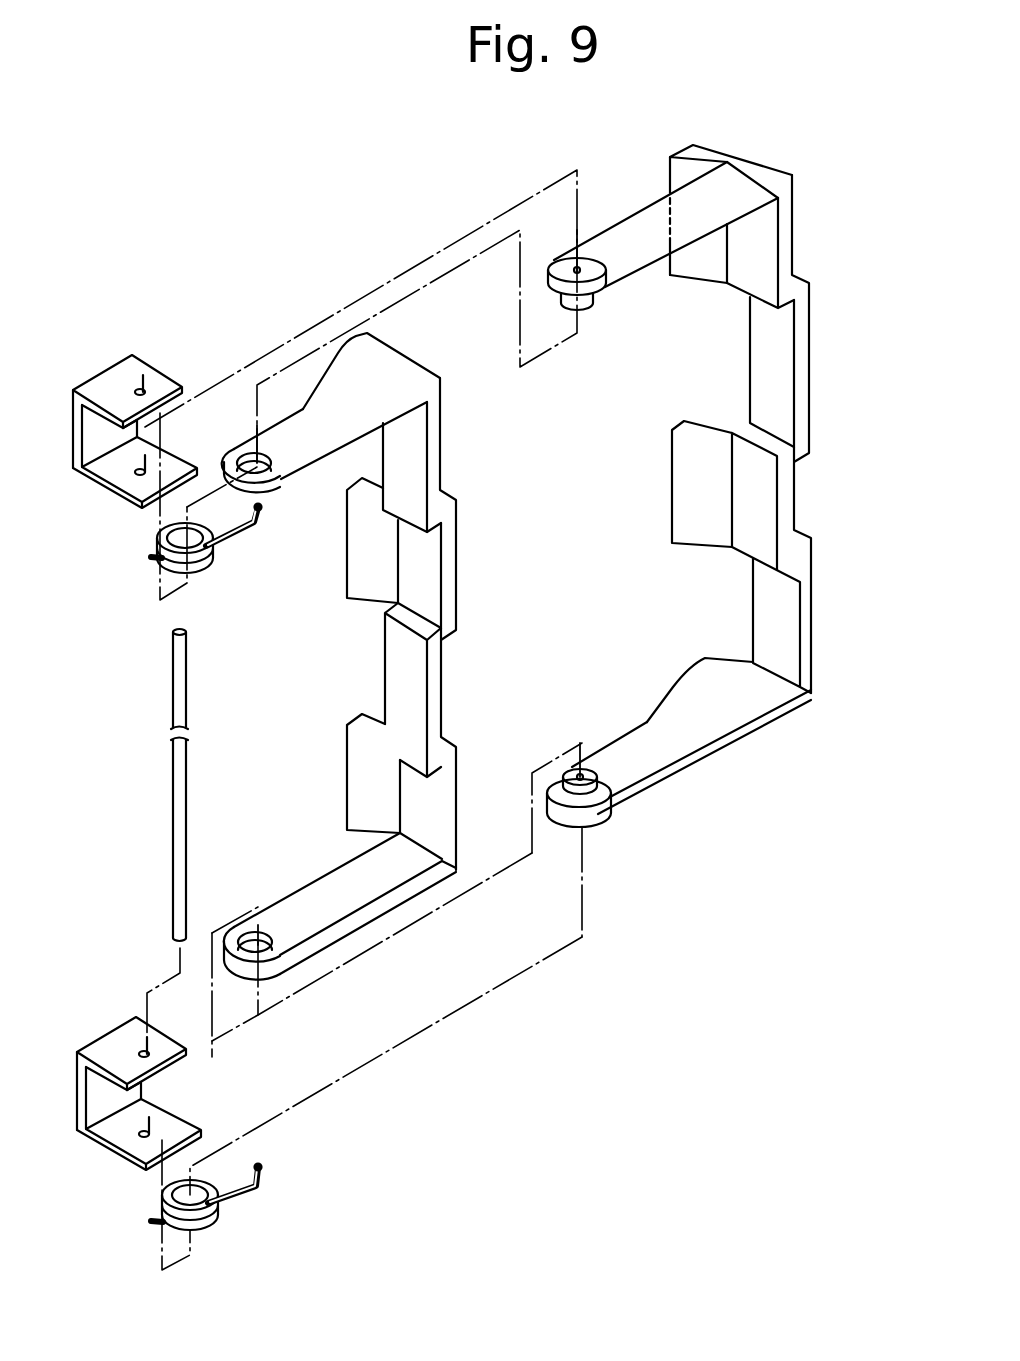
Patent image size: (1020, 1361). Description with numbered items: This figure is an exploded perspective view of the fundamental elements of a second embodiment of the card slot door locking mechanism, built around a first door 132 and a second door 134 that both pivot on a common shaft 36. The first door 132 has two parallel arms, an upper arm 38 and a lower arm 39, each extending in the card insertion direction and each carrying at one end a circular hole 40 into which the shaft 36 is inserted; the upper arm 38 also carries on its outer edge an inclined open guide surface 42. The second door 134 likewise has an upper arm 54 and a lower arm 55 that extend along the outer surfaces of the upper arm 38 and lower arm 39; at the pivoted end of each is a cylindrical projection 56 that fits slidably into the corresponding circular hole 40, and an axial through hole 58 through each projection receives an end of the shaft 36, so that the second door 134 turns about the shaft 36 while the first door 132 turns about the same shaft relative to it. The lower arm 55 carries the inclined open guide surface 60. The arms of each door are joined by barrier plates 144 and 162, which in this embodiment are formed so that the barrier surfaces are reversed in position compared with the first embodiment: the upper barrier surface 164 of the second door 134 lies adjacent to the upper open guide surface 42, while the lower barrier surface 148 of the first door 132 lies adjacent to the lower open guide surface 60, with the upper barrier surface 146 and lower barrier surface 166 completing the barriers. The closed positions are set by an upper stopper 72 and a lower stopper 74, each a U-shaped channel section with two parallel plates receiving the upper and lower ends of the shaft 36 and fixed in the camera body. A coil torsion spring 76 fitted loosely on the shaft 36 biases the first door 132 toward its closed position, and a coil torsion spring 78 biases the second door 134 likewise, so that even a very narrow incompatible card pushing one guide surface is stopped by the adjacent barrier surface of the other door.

The shaft 36 is at (172, 767).
The upper arm 38 is at (313, 444).
The lower arm 39 is at (315, 887).
The circular hole 40 is at (268, 452).
The open guide surface 42 is at (322, 376).
The upper arm 54 is at (640, 228).
The lower arm 55 is at (678, 747).
The cylindrical projection 56 is at (585, 305).
The axial through hole 58 is at (587, 262).
The open guide surface 60 is at (672, 687).
The upper stopper 72 is at (96, 368).
The lower stopper 74 is at (98, 1036).
The coil torsion spring 76 is at (206, 552).
The coil torsion spring 78 is at (218, 1213).
The first door 132 is at (335, 630).
The second door 134 is at (679, 504).
The barrier plate 144 is at (490, 372).
The upper barrier surface 146 is at (363, 548).
The lower barrier surface 148 is at (363, 760).
The barrier plate 162 is at (845, 680).
The upper barrier surface 164 is at (696, 275).
The lower barrier surface 166 is at (706, 540).